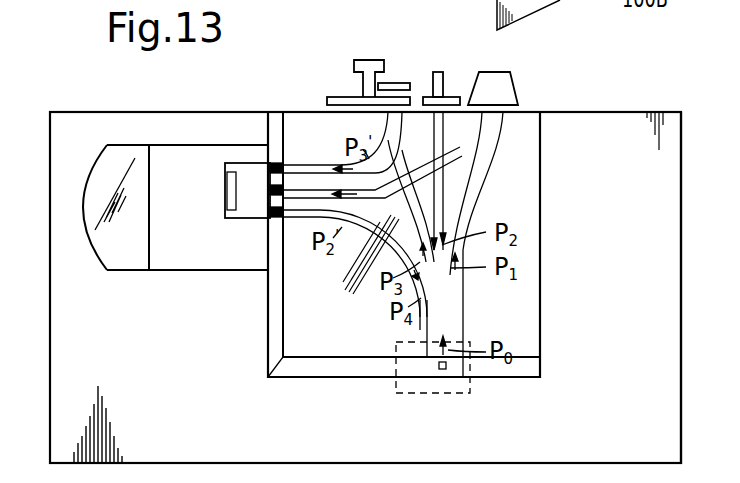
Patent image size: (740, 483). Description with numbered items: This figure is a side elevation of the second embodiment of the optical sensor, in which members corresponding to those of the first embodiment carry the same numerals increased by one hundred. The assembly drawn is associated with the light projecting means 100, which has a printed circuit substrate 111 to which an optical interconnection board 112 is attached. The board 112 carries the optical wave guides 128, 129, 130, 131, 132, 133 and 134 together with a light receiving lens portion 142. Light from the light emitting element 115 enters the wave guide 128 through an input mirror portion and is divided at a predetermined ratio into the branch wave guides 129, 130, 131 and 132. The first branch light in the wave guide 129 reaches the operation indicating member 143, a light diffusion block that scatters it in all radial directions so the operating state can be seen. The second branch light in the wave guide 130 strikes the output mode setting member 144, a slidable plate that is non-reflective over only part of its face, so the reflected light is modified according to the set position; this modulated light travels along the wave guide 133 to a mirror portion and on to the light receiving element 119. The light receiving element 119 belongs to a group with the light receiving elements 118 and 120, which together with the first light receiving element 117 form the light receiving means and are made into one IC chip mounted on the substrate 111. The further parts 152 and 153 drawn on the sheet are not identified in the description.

The light projecting means 100 is at (580, 110).
The printed circuit substrate 111 is at (664, 193).
The optical interconnection board 112 is at (520, 300).
The light emitting element 115 is at (441, 372).
The first light receiving element 117 is at (225, 205).
The light receiving element 118 is at (272, 188).
The light receiving element 119 is at (270, 165).
The light receiving element 120 is at (278, 218).
The optical wave guide 128 is at (455, 310).
The optical wave guide 129 is at (488, 181).
The optical wave guide 130 is at (440, 163).
The optical wave guide 131 is at (349, 218).
The optical wave guide 132 is at (372, 237).
The optical wave guide 133 is at (300, 183).
The optical wave guide 134 is at (308, 190).
The light receiving lens portion 142 is at (123, 257).
The operation indicating member 143 is at (502, 72).
The output mode setting member 144 is at (438, 74).
The reagent container 152 is at (358, 60).
The slide plate 153 is at (395, 83).